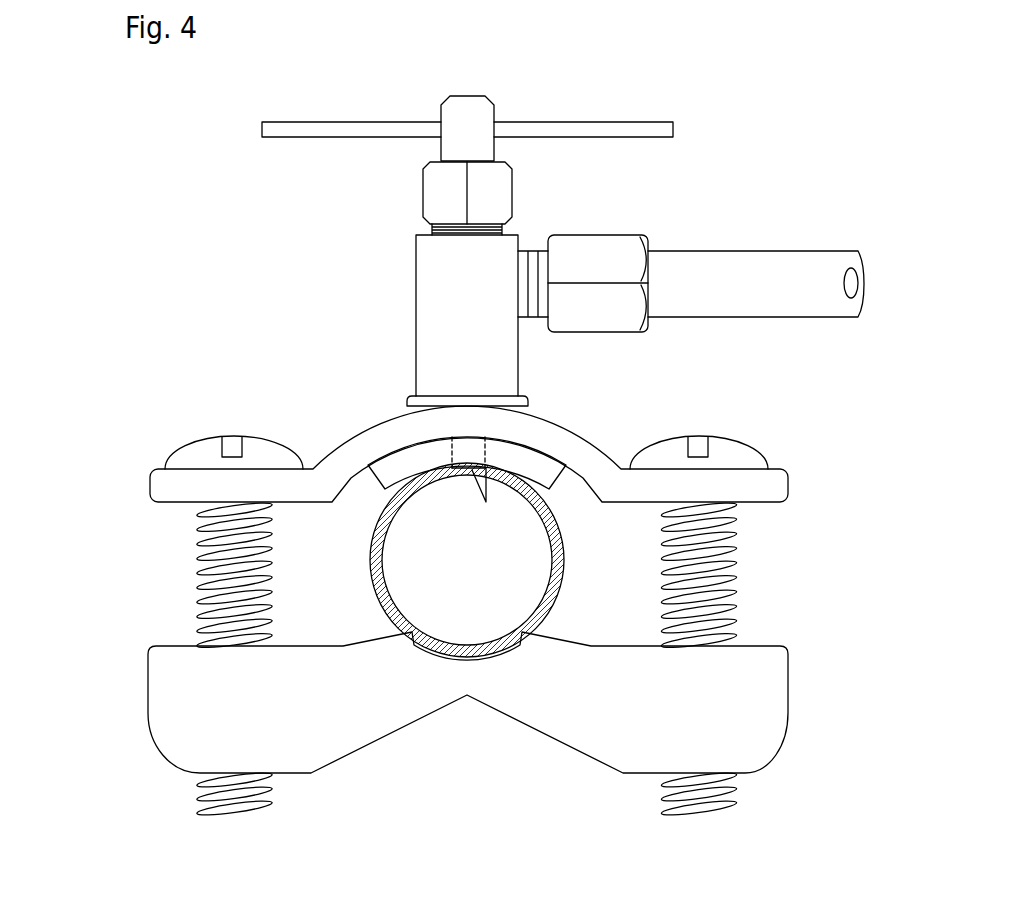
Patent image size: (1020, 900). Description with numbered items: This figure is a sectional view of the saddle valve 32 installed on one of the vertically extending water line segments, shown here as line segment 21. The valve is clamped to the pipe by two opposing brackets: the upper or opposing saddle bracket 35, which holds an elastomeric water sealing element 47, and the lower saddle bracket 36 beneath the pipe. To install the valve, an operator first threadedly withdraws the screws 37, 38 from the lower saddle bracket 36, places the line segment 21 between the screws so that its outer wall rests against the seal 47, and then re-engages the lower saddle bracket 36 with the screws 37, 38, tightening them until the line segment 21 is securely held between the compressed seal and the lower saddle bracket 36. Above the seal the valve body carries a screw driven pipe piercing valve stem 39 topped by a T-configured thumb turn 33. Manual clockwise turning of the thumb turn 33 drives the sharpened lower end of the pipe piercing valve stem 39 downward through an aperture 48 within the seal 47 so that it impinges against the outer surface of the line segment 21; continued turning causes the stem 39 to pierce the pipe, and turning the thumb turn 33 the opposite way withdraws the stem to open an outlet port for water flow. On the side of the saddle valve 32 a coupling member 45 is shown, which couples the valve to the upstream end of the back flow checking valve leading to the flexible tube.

The line segment 21 is at (558, 535).
The saddle valve 32 is at (440, 275).
The thumb turn 33 is at (605, 130).
The opposing saddle bracket 35 is at (773, 488).
The lower saddle bracket 36 is at (190, 705).
The screw 37 is at (248, 450).
The screw 38 is at (737, 590).
The pipe piercing valve stem 39 is at (477, 483).
The coupling member 45 is at (627, 317).
The elastomeric water sealing element 47 is at (518, 460).
The aperture 48 is at (462, 462).